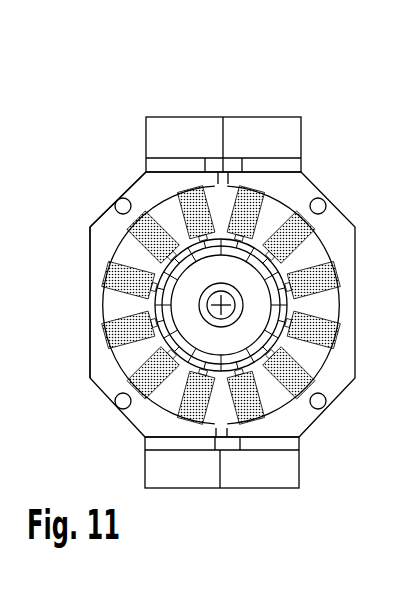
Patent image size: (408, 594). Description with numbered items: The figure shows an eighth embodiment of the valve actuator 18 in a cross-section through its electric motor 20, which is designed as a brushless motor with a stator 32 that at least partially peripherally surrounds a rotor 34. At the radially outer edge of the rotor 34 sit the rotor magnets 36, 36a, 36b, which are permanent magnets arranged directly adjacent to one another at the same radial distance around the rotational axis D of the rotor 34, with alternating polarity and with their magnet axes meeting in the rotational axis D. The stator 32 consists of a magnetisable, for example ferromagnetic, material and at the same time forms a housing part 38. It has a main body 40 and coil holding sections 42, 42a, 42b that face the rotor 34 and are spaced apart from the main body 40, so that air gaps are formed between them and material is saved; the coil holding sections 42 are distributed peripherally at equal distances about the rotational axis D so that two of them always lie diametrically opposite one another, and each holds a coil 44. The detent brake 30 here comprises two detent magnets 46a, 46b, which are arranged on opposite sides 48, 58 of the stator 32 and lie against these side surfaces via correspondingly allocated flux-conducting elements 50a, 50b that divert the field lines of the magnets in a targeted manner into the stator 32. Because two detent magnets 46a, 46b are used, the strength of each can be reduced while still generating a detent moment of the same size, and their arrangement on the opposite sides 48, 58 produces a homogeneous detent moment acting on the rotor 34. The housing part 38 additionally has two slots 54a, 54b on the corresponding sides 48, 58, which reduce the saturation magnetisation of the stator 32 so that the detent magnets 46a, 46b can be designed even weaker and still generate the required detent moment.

The valve actuator 18 is at (346, 110).
The electric motor 20 is at (99, 187).
The detent brake 30 is at (267, 106).
The stator 32 is at (300, 198).
The rotor 34 is at (253, 283).
The rotor magnets 36 is at (180, 350).
The rotor magnet 36a is at (188, 262).
The rotor magnet 36b is at (257, 259).
The housing part 38 is at (327, 211).
The main body 40 is at (92, 226).
The coil holding sections 42 is at (138, 310).
The stator pole 42a is at (160, 220).
The stator pole 42b is at (285, 215).
The coil 44 is at (113, 281).
The upper permanent magnet 46a is at (200, 143).
The lower permanent magnet 46b is at (278, 467).
The side 48 is at (156, 168).
The flux-conducting element 50a is at (200, 163).
The flux-conducting element 50b is at (188, 443).
The slot 54a is at (222, 168).
The slot 54b is at (232, 431).
The side 58 is at (158, 443).
The rotational axis D is at (221, 308).